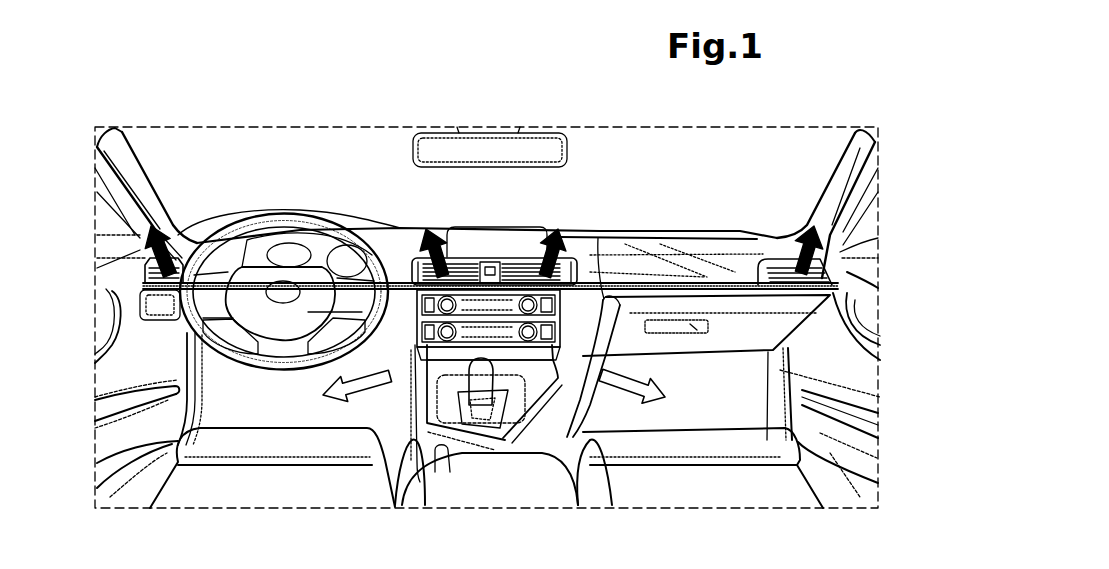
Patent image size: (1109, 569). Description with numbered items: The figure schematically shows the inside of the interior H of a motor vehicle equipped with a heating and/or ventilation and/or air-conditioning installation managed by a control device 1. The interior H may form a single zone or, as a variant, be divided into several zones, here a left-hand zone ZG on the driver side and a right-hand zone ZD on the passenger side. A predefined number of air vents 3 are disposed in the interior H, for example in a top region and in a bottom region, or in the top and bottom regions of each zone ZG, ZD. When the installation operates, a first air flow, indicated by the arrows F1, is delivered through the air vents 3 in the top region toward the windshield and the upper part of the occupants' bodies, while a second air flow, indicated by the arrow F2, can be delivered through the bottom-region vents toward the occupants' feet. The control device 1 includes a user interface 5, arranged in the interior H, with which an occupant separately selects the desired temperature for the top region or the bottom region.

The control device 1 is at (560, 304).
The air vents 3 is at (180, 250).
The user interface 5 is at (470, 300).
The interior H is at (177, 186).
The first air flow F1 is at (148, 246).
The second air flow F2 is at (655, 396).
The left-hand zone ZG is at (276, 409).
The right-hand zone ZD is at (733, 408).